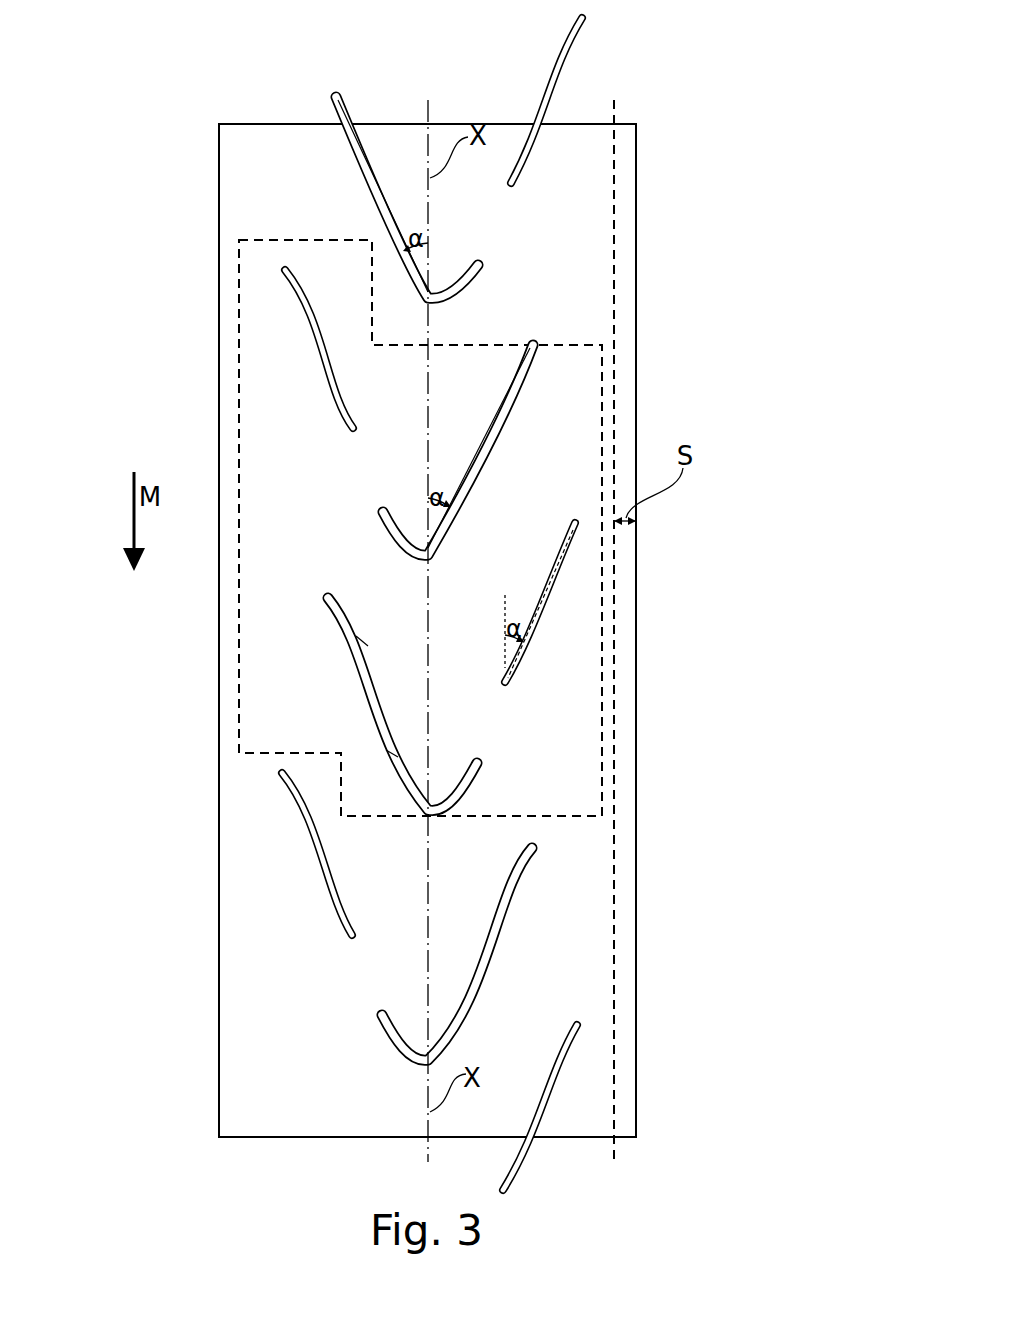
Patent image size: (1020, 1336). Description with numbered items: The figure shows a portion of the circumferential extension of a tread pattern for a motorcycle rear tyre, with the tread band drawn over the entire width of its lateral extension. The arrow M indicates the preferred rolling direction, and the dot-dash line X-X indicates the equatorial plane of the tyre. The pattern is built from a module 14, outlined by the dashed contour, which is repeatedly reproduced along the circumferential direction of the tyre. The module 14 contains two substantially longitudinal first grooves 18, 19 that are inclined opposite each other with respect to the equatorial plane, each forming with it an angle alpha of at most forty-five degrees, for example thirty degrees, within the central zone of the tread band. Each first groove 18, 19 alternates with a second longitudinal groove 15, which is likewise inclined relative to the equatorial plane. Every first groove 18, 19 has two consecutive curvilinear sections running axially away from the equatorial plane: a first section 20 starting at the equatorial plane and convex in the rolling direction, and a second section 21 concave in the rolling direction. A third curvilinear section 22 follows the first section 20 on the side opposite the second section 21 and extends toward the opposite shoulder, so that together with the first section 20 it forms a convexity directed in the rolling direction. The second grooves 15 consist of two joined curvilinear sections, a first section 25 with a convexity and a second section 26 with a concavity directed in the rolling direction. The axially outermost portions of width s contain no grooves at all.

The module 14 is at (614, 388).
The second longitudinal groove 15 is at (326, 324).
The first longitudinal groove 18 is at (376, 156).
The first longitudinal groove 19 is at (537, 336).
The first curvilinear section 20 is at (473, 512).
The second curvilinear section 21 is at (507, 380).
The third curvilinear section 22 is at (383, 525).
The first section 25 is at (352, 425).
The second section 26 is at (290, 268).